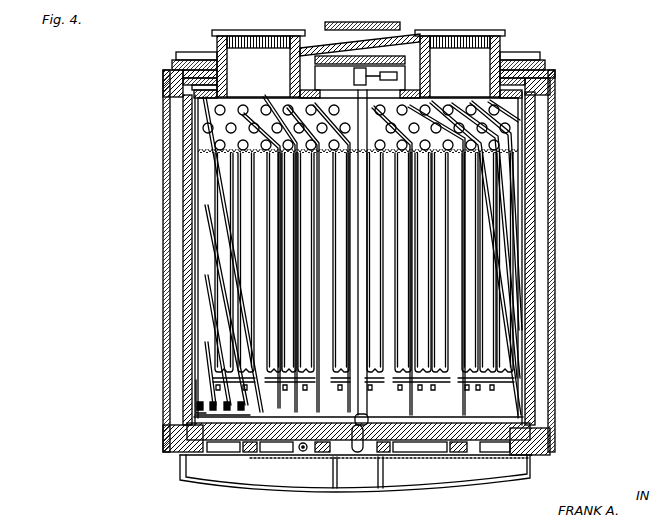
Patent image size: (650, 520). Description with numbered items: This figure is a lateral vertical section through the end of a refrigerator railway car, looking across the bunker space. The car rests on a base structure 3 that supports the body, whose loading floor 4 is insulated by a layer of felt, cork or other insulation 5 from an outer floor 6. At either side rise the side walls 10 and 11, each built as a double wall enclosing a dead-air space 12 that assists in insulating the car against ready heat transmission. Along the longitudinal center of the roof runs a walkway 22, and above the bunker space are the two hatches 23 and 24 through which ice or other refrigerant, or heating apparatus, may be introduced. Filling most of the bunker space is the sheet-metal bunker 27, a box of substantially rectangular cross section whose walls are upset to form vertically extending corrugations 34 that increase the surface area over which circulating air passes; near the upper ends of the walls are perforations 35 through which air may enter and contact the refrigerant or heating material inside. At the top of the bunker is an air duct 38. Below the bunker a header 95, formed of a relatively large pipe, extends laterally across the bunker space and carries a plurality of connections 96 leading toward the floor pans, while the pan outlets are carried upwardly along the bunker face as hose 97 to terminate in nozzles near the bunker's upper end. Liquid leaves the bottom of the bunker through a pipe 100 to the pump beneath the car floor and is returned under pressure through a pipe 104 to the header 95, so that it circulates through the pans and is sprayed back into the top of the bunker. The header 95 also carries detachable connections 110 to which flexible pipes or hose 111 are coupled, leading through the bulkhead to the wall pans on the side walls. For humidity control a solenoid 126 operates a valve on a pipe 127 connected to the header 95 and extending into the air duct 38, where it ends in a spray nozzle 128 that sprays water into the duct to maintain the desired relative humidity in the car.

The base structure 3 is at (399, 498).
The loading floor 4 is at (432, 448).
The insulation 5 is at (470, 432).
The outer floor 6 is at (490, 440).
The side wall 10 is at (165, 161).
The side wall 11 is at (554, 200).
The dead-air space 12 is at (176, 214).
The walkway 22 is at (362, 24).
The hatch 23 is at (253, 35).
The hatch 24 is at (485, 38).
The bunker 27 is at (540, 100).
The corrugations 34 is at (490, 388).
The perforations 35 is at (447, 108).
The air duct 38 is at (408, 34).
The header 95 is at (192, 426).
The connections 96 is at (225, 441).
The outlet hose 97 is at (413, 417).
The pipe 100 is at (305, 453).
The pipe 104 is at (355, 453).
The detachable connections 110 is at (182, 402).
The flexible pipes or hose 111 is at (183, 392).
The solenoid 126 is at (430, 36).
The pipe 127 is at (353, 77).
The spray nozzle 128 is at (362, 68).